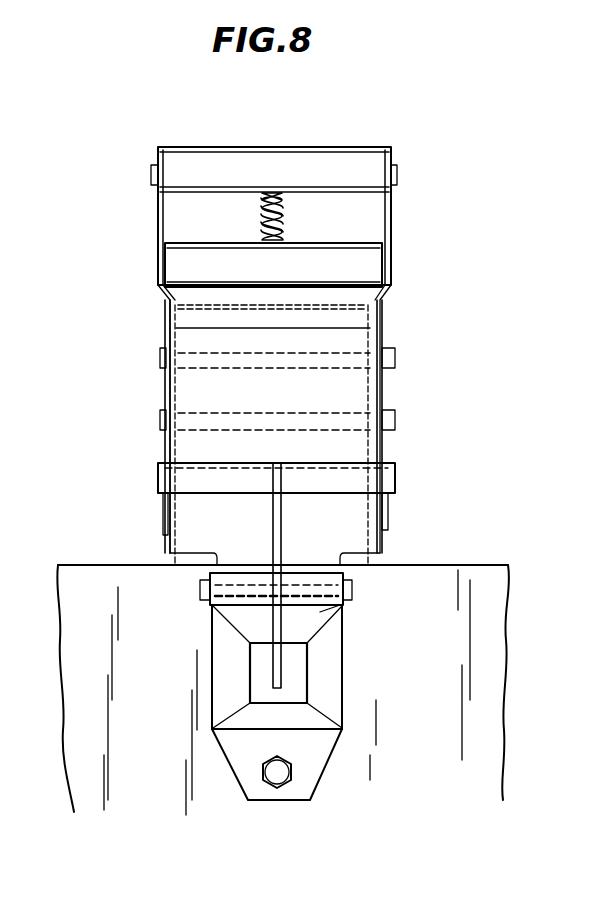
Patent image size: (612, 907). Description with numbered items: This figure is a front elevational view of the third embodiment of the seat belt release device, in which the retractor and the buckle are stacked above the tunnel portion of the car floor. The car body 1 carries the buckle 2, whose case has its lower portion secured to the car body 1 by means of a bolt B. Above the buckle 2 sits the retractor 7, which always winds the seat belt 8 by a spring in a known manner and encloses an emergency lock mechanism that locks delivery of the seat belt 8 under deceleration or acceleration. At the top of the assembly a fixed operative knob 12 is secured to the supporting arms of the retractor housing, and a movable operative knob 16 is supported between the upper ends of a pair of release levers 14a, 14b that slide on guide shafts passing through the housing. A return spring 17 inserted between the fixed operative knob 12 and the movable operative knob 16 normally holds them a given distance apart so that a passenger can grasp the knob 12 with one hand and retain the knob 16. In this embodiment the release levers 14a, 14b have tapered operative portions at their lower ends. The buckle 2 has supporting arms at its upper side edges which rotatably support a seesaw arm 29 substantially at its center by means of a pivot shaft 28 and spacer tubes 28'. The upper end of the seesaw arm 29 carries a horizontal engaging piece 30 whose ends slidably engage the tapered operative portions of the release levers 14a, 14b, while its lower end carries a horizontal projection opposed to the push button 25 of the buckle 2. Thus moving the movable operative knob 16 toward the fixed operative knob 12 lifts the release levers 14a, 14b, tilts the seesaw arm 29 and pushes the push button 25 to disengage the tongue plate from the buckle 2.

The car body 1 is at (455, 572).
The buckle 2 is at (330, 703).
The retractor 7 is at (375, 323).
The seat belt 8 is at (375, 296).
The fixed operative knob 12 is at (372, 160).
The release lever 14a is at (165, 398).
The release lever 14b is at (392, 399).
The movable operative knob 16 is at (373, 258).
The return spring 17 is at (283, 221).
The push button 25 is at (305, 681).
The pivot shaft 28 is at (247, 610).
The spacer tube 28' is at (309, 613).
The seesaw arm 29 is at (283, 546).
The horizontal engaging piece 30 is at (383, 463).
The bolt B is at (280, 778).